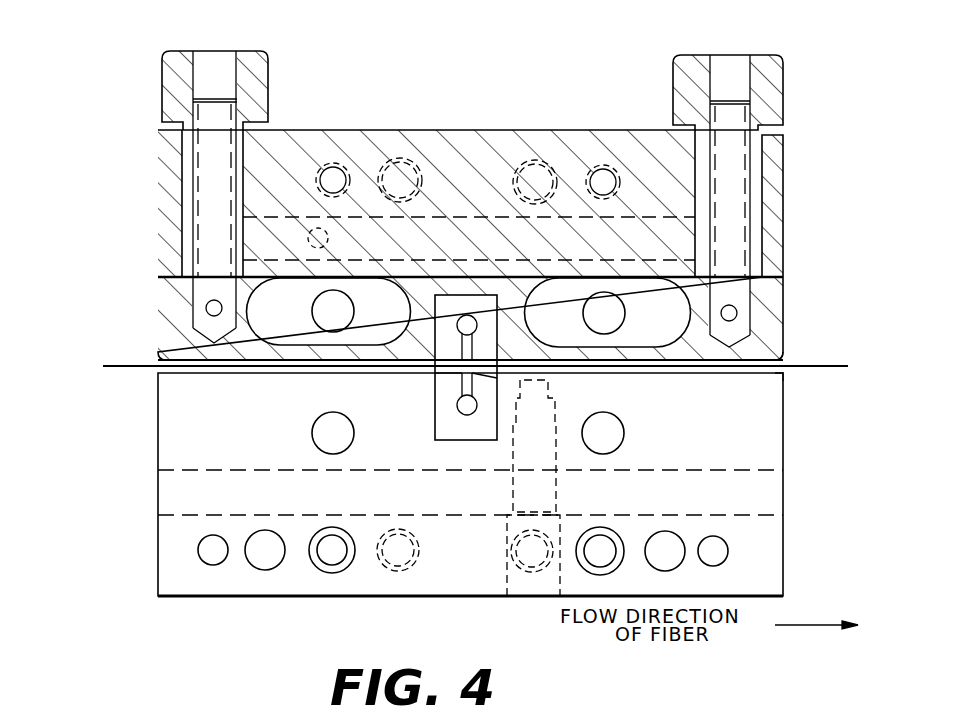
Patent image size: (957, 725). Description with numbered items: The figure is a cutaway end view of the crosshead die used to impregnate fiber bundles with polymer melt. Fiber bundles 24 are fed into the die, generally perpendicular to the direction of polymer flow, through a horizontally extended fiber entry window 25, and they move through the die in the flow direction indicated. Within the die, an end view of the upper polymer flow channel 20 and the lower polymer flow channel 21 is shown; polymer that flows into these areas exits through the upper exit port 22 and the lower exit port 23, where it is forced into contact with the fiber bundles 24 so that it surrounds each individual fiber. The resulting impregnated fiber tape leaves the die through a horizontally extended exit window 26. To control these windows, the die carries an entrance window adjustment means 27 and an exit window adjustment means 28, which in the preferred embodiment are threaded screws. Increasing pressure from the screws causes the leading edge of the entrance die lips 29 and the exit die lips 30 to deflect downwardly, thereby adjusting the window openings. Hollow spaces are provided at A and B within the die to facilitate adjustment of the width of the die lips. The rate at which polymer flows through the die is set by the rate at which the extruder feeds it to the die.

The upper polymer flow channel 20 is at (468, 316).
The lower polymer flow channel 21 is at (458, 410).
The upper exit port 22 is at (472, 348).
The lower exit port 23 is at (462, 386).
The fiber bundles 24 is at (120, 364).
The fiber entry window 25 is at (158, 370).
The exit window 26 is at (783, 368).
The entrance window adjustment means 27 is at (268, 55).
The exit window adjustment means 28 is at (783, 58).
The entrance die lips 29 is at (158, 357).
The exit die lips 30 is at (783, 362).
The hollow space A is at (292, 331).
The hollow space B is at (623, 337).